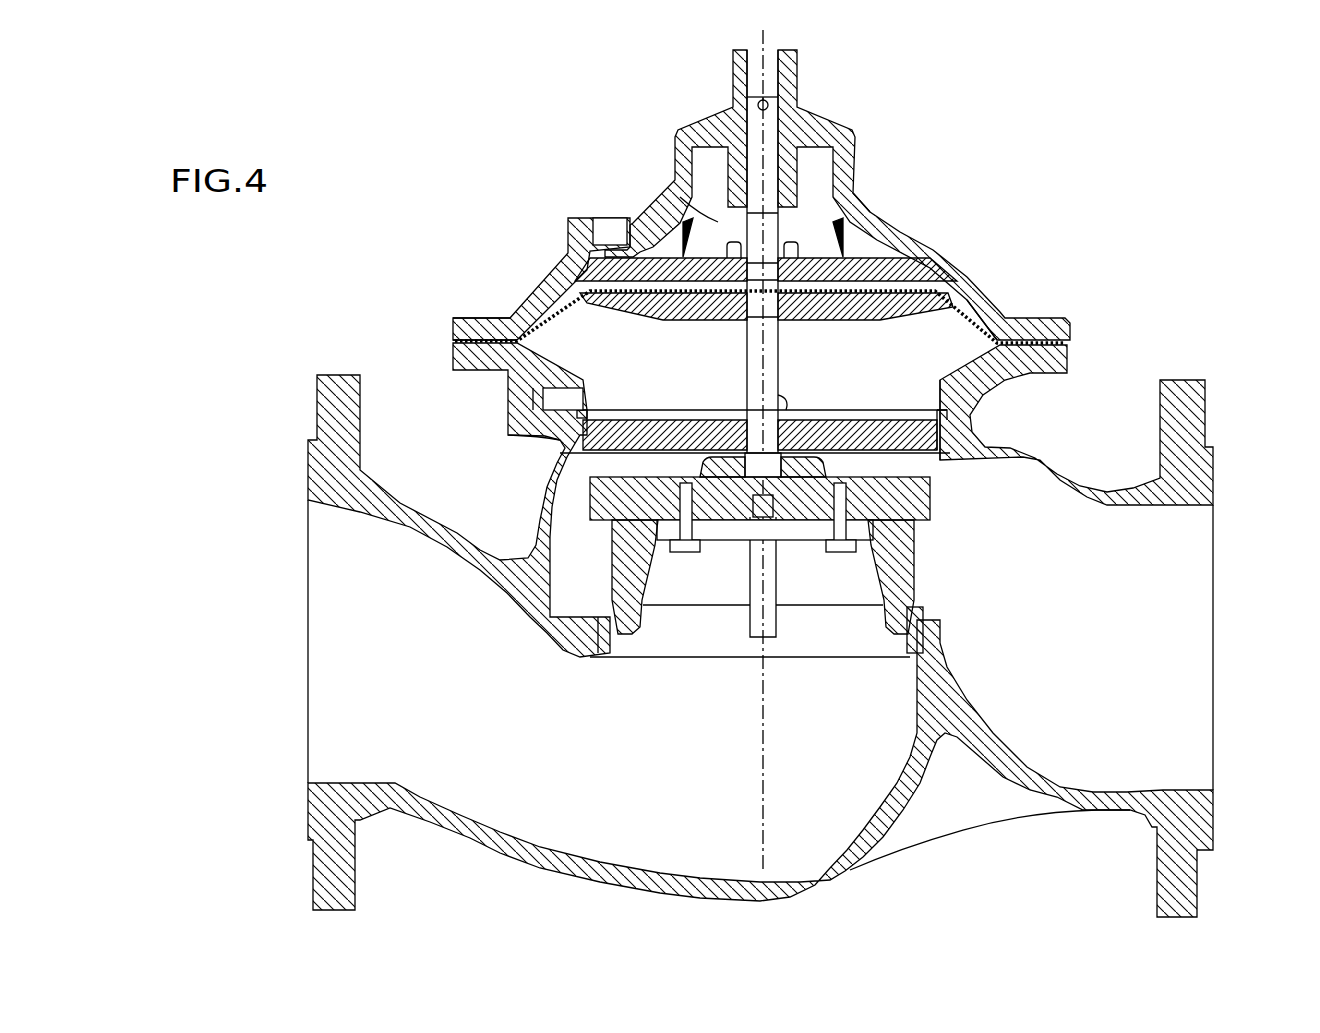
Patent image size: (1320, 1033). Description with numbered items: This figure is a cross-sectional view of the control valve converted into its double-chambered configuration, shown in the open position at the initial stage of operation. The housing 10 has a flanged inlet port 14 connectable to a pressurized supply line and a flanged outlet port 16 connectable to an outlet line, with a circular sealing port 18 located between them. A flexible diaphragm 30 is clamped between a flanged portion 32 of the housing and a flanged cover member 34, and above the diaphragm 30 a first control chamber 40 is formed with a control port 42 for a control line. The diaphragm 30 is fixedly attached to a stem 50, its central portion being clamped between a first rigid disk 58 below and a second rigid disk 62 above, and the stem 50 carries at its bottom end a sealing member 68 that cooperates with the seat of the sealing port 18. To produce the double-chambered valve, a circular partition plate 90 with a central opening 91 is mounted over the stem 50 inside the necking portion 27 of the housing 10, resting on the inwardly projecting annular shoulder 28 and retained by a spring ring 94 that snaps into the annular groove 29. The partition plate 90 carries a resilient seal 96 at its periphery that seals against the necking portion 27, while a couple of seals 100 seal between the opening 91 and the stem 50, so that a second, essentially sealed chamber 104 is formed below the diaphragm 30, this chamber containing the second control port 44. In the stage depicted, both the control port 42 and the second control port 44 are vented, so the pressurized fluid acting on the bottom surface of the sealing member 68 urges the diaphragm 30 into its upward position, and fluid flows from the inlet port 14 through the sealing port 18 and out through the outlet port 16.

The housing 10 is at (1143, 279).
The flanged inlet port 14 is at (310, 635).
The flanged outlet port 16 is at (1212, 635).
The sealing port 18 is at (655, 645).
The necking portion 27 is at (875, 413).
The inwardly projecting annular shoulder 28 is at (580, 440).
The annular groove 29 is at (940, 412).
The flexible diaphragm 30 is at (533, 295).
The flanged portion of the housing 32 is at (1037, 367).
The flanged cover member 34 is at (970, 283).
The first control chamber 40 is at (717, 220).
The control port 42 is at (605, 233).
The second control port 44 is at (553, 437).
The stem 50 is at (773, 380).
The first rigid disk 58 is at (457, 343).
The second rigid disk 62 is at (573, 247).
The sealing member 68 is at (727, 507).
The circular partition plate 90 is at (547, 460).
The central opening 91 is at (790, 400).
The spring ring 94 is at (593, 410).
The resilient seal 96 is at (958, 460).
The seals 100 is at (720, 420).
The second chamber 104 is at (530, 390).